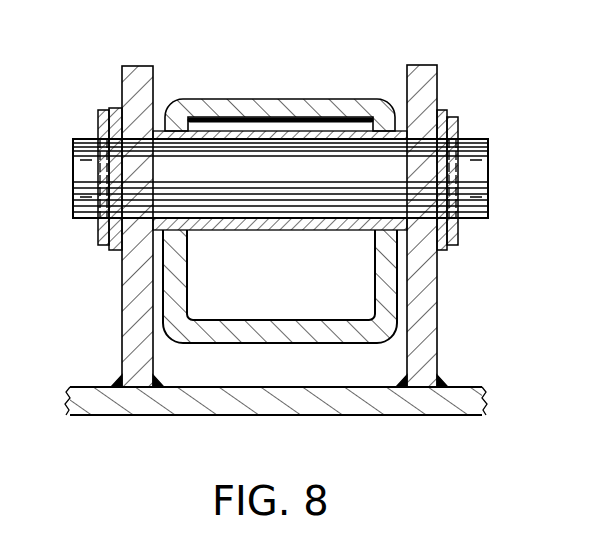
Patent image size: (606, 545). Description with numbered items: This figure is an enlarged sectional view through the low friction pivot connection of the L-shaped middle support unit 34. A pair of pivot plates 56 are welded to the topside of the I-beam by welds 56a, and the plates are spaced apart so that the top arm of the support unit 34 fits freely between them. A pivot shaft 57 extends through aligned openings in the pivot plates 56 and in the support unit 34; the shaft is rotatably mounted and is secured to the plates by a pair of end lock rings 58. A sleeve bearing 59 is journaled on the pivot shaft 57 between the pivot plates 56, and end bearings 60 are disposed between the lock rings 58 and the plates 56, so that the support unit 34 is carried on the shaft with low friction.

The middle support unit 34 is at (350, 130).
The pivot plates 56 is at (153, 355).
The welds 56a is at (396, 382).
The pivot shaft 57 is at (490, 180).
The end lock rings 58 is at (102, 110).
The sleeve bearing 59 is at (215, 127).
The end bearings 60 is at (113, 111).